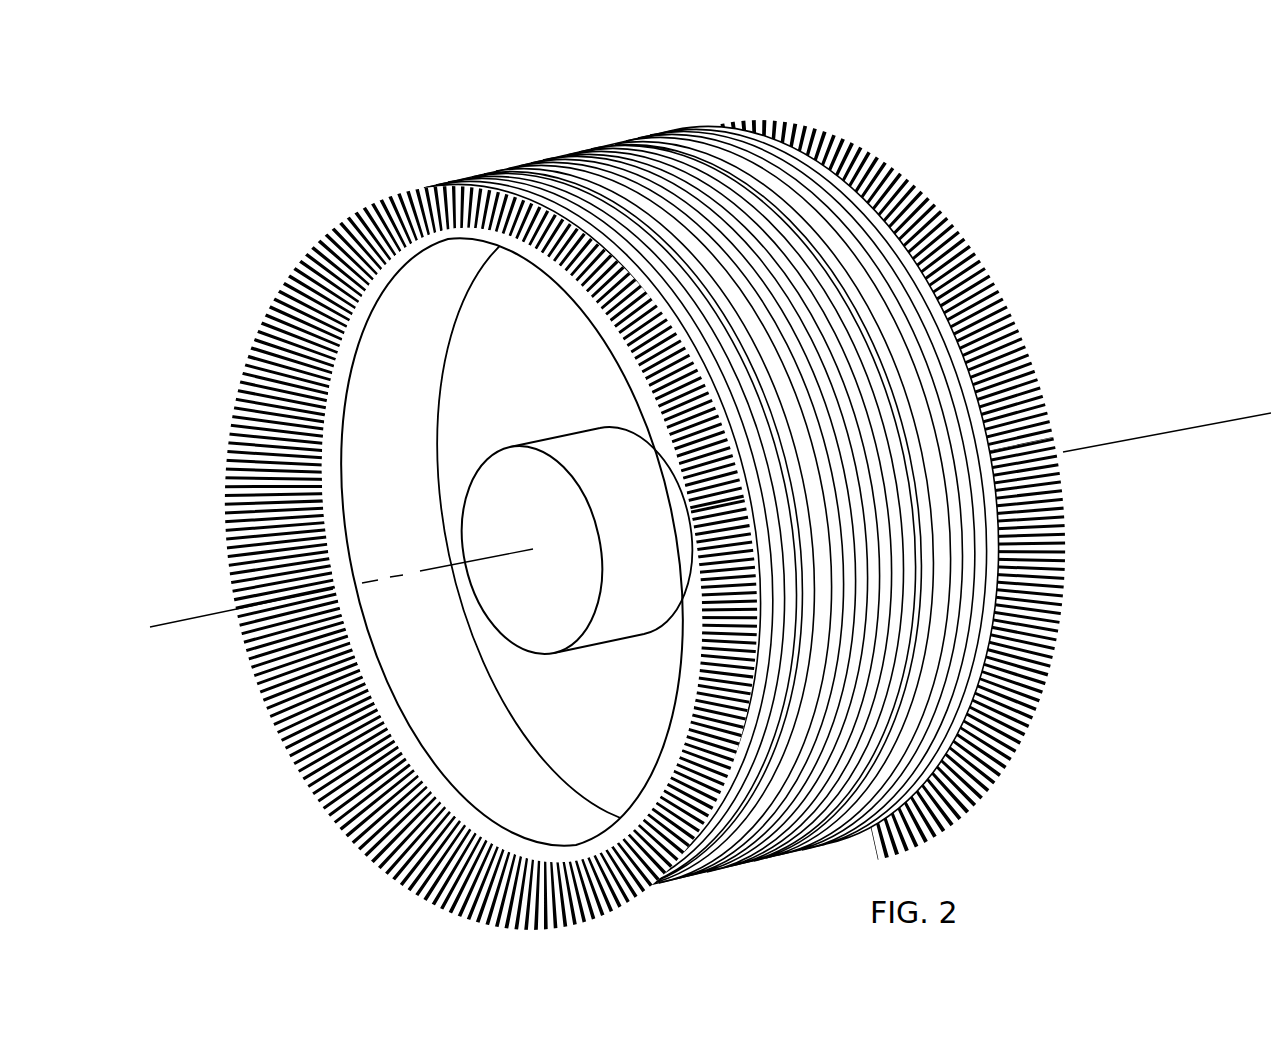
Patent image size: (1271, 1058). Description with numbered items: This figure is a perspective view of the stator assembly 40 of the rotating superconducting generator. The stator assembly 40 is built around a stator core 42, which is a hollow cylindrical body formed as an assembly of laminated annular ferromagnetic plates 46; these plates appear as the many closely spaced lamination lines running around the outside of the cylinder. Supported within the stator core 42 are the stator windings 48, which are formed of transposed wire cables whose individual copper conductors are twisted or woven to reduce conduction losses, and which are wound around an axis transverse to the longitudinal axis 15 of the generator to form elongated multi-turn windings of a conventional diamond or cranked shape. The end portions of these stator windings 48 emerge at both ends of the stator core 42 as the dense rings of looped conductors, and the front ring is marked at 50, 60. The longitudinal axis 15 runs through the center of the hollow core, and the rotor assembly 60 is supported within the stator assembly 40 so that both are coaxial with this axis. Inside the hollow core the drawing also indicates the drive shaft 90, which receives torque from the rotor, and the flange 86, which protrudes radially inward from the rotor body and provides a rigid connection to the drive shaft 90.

The stator assembly 40 is at (363, 113).
The stator core 42 is at (913, 363).
The laminated annular ferromagnetic plates 46 is at (963, 608).
The stator windings 48 is at (1043, 413).
The first end winding portion 50 is at (280, 720).
The rotor assembly 60 is at (280, 720).
The flange 86 is at (612, 731).
The drive shaft 90 is at (527, 527).
The longitudinal axis 15 is at (445, 567).